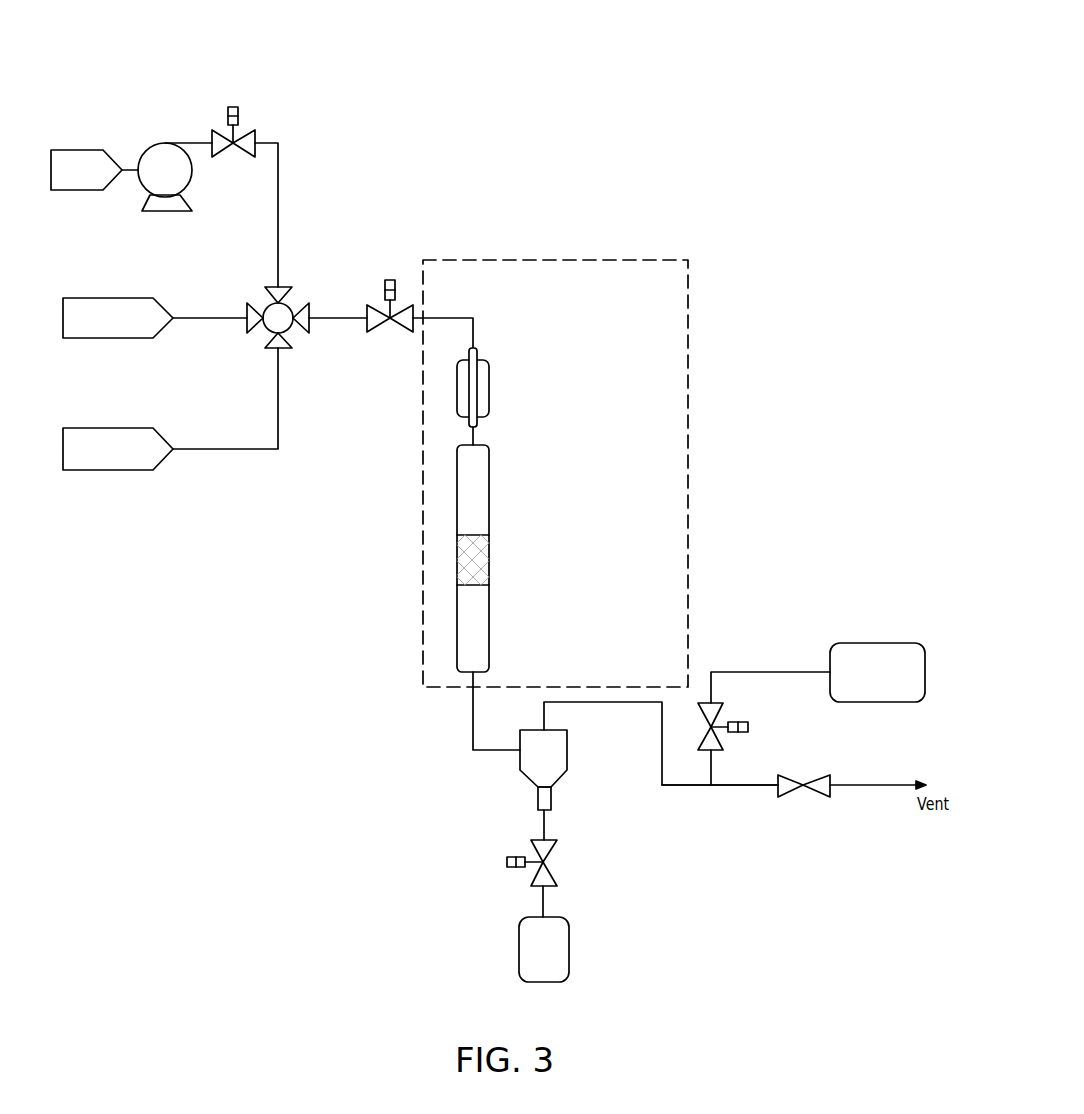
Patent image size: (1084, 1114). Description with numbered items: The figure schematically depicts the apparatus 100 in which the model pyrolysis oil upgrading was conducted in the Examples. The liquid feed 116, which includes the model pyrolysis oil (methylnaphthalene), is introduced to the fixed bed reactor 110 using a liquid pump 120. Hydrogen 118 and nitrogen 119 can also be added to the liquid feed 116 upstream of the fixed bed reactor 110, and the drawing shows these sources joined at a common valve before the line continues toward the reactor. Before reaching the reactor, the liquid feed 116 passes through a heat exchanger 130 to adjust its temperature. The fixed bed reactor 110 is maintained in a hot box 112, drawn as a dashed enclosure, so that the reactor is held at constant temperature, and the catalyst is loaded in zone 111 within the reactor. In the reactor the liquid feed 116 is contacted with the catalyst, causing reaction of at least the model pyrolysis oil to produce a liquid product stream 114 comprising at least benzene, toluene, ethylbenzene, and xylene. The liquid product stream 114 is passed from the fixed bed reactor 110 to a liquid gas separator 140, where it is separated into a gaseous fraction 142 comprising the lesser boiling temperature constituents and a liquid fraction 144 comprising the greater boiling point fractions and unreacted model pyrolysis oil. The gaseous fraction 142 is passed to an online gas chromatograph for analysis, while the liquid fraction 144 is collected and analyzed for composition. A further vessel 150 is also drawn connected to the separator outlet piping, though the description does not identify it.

The apparatus 100 is at (745, 55).
The fixed bed reactor 110 is at (490, 492).
The zone 111 is at (484, 563).
The hot box 112 is at (690, 306).
The liquid product stream 114 is at (473, 723).
The liquid feed 116 is at (94, 183).
The hydrogen 118 is at (125, 331).
The nitrogen 119 is at (125, 462).
The liquid pump 120 is at (161, 152).
The heat exchanger 130 is at (490, 390).
The liquid gas separator 140 is at (567, 757).
The gaseous fraction 142 is at (683, 787).
The liquid fraction 144 is at (562, 952).
The gas supply vessel 150 is at (878, 643).